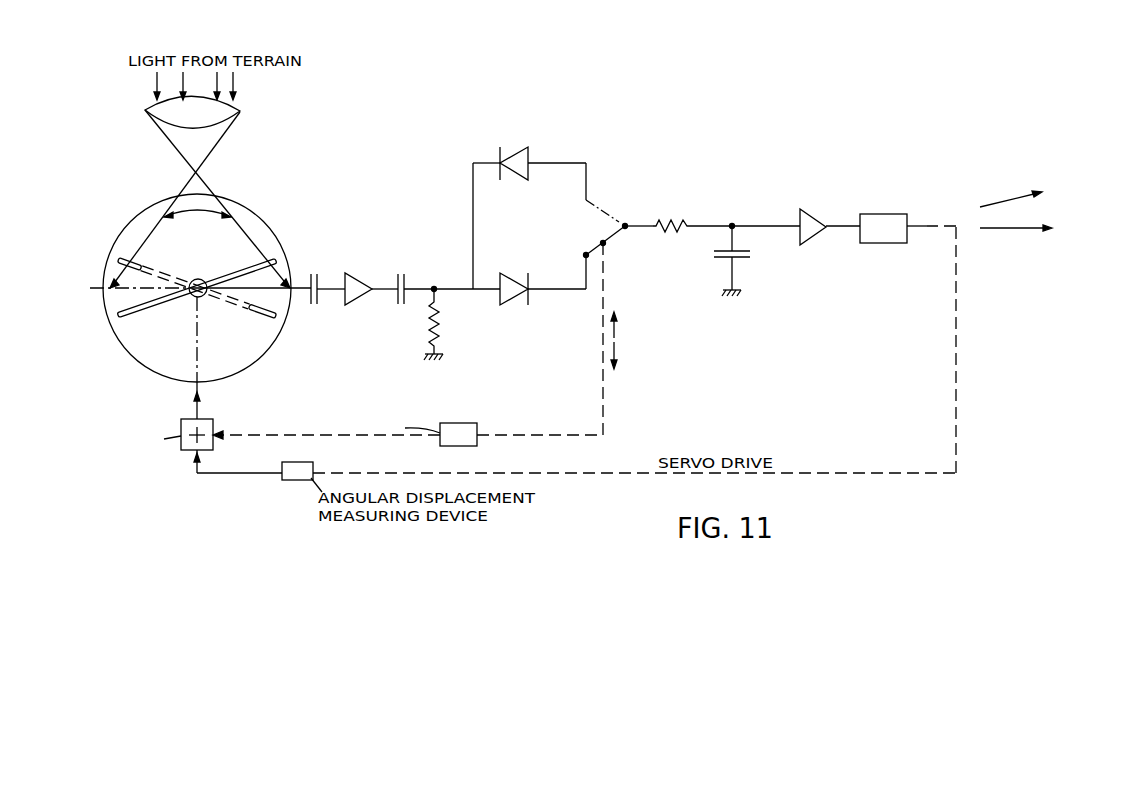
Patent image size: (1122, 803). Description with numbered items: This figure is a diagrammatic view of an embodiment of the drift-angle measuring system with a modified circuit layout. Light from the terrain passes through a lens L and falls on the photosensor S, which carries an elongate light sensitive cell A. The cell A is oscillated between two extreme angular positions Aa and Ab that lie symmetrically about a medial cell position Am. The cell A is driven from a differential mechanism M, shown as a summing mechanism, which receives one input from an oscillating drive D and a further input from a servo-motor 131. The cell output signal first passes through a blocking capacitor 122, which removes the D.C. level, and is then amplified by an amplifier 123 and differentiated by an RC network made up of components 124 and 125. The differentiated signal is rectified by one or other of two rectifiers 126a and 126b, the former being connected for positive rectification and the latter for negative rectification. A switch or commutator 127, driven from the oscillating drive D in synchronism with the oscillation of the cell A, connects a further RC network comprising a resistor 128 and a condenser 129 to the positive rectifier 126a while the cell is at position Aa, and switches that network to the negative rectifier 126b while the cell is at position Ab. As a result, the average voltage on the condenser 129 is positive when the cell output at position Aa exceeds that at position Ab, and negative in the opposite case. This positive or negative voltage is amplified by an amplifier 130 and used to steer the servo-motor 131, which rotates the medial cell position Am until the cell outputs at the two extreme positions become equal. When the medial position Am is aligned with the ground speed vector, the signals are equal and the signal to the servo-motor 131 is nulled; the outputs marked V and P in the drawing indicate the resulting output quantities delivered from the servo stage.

The lens L is at (239, 112).
The photosensor S is at (261, 346).
The light sensitive cell A is at (212, 286).
The extreme angular position Aa is at (250, 268).
The extreme angular position Ab is at (255, 310).
The medial cell position Am is at (100, 288).
The differential mechanism M is at (212, 425).
The oscillating drive D is at (477, 426).
The blocking capacitor 122 is at (313, 306).
The amplifier 123 is at (358, 305).
The RC network component 124 is at (400, 276).
The RC network component 125 is at (430, 336).
The positive rectifier 126a is at (521, 149).
The negative rectifier 126b is at (512, 302).
The switch or commutator 127 is at (599, 245).
The resistor 128 is at (674, 238).
The condenser 129 is at (715, 261).
The amplifier 130 is at (815, 243).
The servo-motor 131 is at (875, 244).
The velocity output V is at (1019, 195).
The position output P is at (1023, 229).